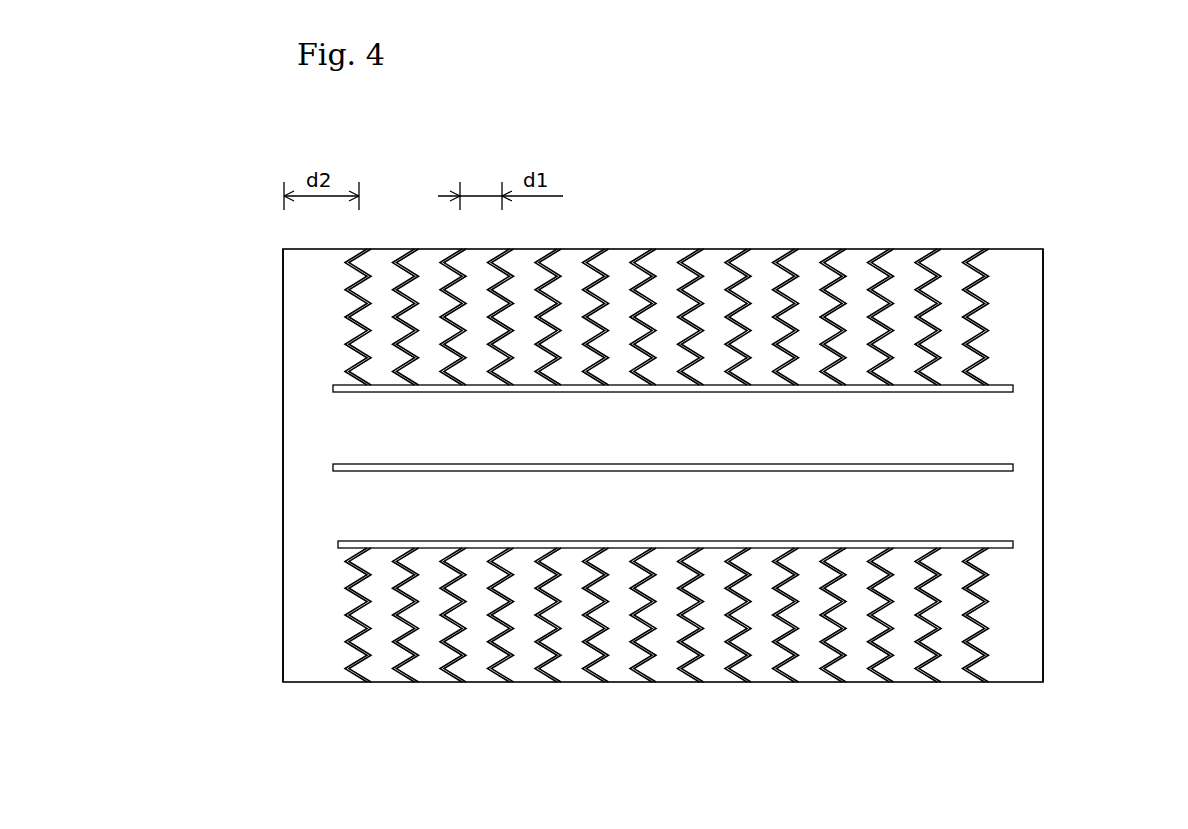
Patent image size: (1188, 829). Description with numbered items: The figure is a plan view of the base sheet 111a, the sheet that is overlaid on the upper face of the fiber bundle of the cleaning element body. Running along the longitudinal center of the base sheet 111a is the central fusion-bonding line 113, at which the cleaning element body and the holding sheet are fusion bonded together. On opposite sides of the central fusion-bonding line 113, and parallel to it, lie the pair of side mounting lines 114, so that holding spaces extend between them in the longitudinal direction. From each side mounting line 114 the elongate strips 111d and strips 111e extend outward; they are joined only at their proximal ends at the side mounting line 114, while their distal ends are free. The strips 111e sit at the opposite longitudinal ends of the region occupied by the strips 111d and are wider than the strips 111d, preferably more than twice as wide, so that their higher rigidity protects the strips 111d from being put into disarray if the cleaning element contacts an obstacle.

The base sheet 111a is at (871, 199).
The strips 111d is at (460, 258).
The strips 111e is at (300, 290).
The central fusion-bonding line 113 is at (347, 472).
The side mounting lines 114 is at (992, 391).